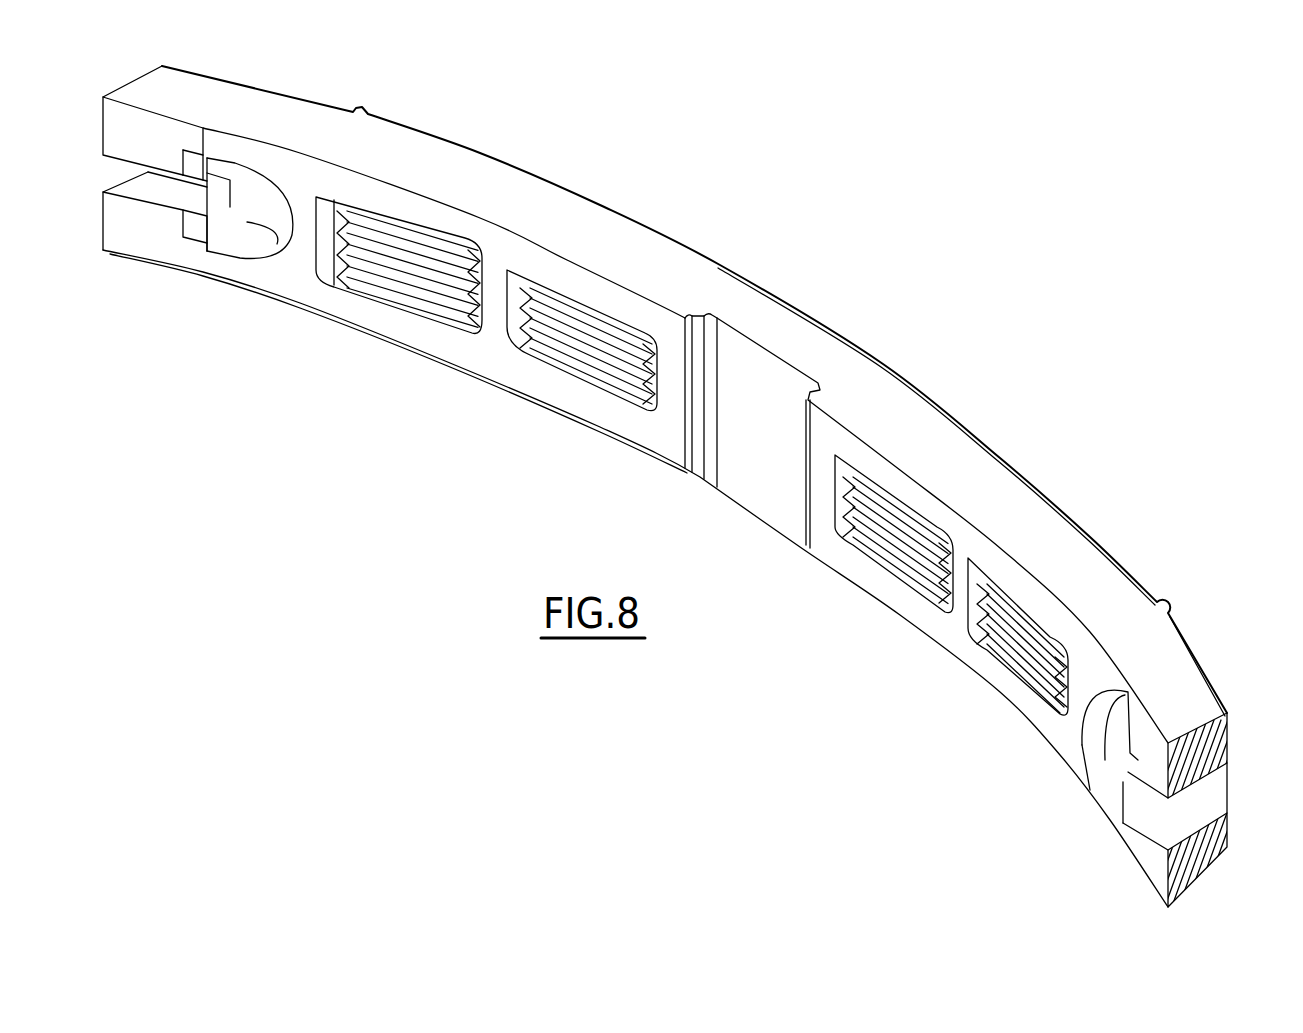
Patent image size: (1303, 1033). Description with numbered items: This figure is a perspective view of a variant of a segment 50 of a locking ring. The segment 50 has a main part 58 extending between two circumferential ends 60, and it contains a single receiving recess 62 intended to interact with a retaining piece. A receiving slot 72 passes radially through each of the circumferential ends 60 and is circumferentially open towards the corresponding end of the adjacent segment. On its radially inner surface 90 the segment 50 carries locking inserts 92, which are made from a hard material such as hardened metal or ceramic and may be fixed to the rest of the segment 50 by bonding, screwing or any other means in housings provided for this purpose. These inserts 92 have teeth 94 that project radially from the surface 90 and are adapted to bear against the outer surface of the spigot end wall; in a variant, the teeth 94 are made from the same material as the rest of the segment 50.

The segment 50 is at (850, 290).
The main part 58 is at (745, 250).
The circumferential end 60 is at (288, 97).
The receiving recess 62 is at (750, 478).
The receiving slot 72 is at (253, 208).
The radially inner surface 90 is at (576, 278).
The locking insert 92 is at (423, 283).
The tooth 94 is at (415, 230).